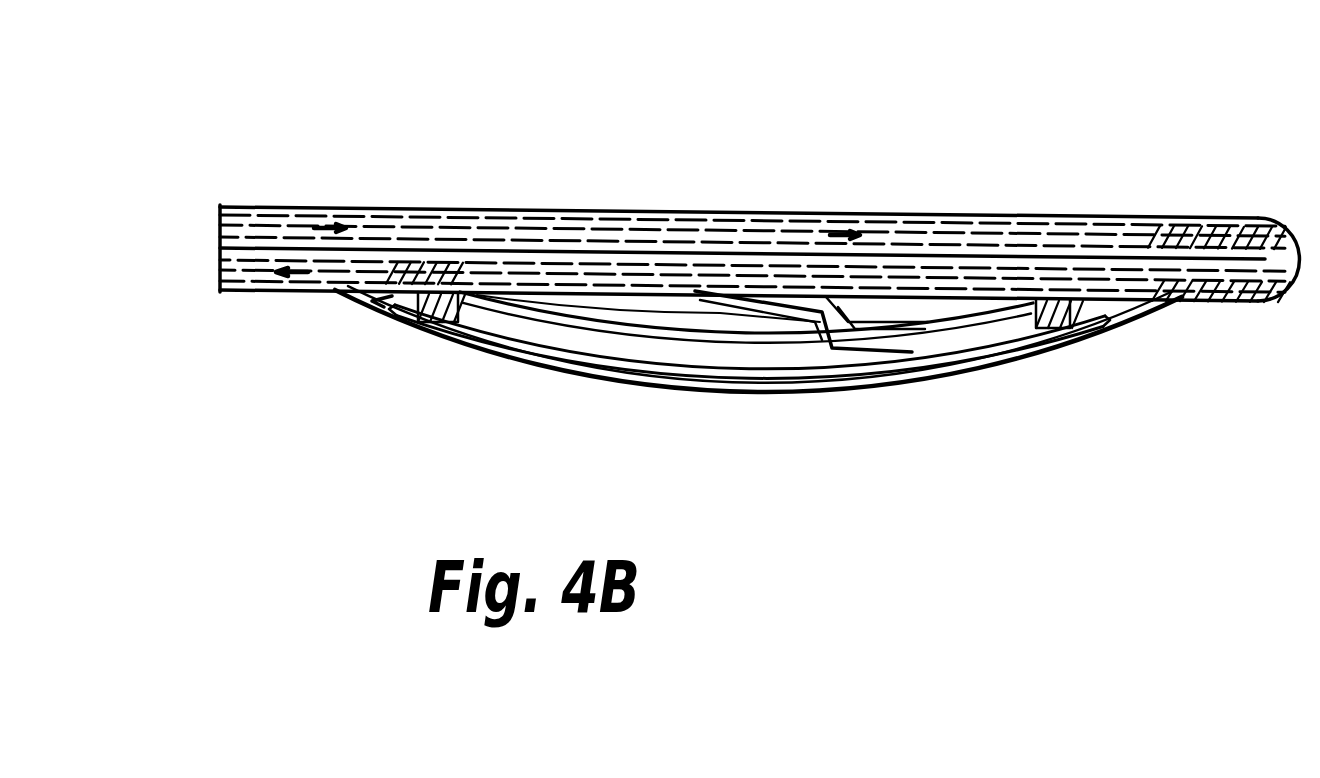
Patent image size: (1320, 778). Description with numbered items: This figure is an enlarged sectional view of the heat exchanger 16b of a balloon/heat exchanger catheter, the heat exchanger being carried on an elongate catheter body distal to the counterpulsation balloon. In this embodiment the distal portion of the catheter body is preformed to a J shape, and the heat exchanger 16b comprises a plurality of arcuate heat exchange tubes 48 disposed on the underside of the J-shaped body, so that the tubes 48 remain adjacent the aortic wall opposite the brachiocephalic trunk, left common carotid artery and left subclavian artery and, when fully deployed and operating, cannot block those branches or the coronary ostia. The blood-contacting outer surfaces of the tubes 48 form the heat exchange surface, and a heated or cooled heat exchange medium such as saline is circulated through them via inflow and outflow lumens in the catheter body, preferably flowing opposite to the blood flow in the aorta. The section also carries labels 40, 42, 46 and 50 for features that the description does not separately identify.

The heat exchanger 16b is at (970, 172).
The catheter body 40 is at (550, 210).
The first lumen 42 is at (228, 225).
The second lumen 46 is at (226, 269).
The heat exchange tubes 48 is at (578, 367).
The retaining clip 50 is at (783, 312).